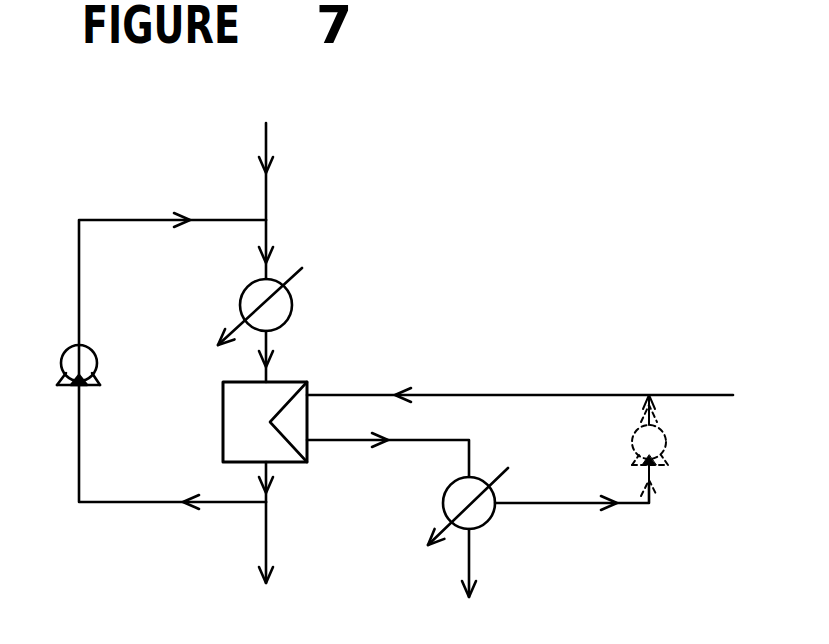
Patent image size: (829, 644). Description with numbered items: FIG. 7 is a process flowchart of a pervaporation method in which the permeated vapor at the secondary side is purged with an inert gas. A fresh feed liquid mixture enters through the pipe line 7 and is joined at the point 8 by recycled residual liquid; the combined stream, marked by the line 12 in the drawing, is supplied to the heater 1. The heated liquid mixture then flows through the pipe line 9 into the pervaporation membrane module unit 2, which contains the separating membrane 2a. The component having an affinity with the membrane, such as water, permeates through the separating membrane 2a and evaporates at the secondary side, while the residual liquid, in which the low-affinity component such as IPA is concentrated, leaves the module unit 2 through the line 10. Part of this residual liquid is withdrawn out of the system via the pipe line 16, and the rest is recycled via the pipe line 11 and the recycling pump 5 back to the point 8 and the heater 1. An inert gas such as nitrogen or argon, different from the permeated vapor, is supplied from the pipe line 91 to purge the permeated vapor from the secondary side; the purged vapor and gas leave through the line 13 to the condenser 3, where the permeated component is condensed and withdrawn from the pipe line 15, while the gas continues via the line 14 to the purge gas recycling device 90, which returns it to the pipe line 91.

The pipe line 7 is at (277, 159).
The recycle line 12 is at (172, 282).
The point 8 is at (277, 248).
The heater 1 is at (260, 300).
The pipe line 9 is at (277, 355).
The module unit 2 is at (242, 418).
The pervaporation membrane 2a is at (269, 422).
The pump for recycling the liquid mixture 5 is at (66, 359).
The pipe line 11 is at (172, 463).
The residue outlet line 10 is at (284, 484).
The pipe line 16 is at (284, 542).
The pipe line 91 is at (520, 379).
The permeate line 13 is at (388, 456).
The condenser 3 is at (462, 506).
The permeate line to pump 14 is at (572, 515).
The pipe line 15 is at (487, 563).
The purge gas recycling device 90 is at (630, 445).